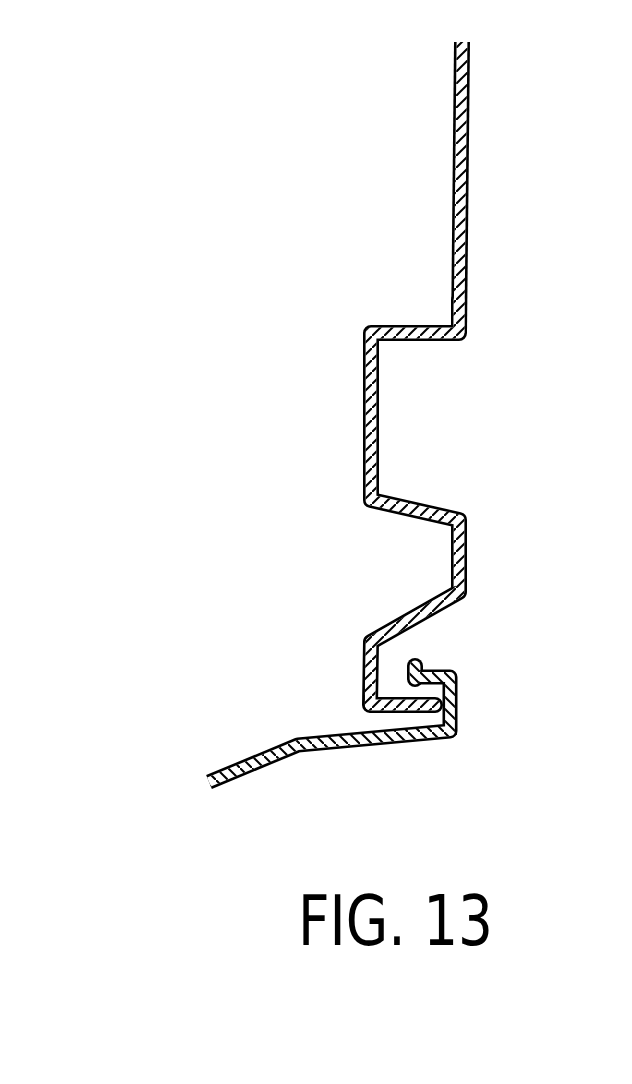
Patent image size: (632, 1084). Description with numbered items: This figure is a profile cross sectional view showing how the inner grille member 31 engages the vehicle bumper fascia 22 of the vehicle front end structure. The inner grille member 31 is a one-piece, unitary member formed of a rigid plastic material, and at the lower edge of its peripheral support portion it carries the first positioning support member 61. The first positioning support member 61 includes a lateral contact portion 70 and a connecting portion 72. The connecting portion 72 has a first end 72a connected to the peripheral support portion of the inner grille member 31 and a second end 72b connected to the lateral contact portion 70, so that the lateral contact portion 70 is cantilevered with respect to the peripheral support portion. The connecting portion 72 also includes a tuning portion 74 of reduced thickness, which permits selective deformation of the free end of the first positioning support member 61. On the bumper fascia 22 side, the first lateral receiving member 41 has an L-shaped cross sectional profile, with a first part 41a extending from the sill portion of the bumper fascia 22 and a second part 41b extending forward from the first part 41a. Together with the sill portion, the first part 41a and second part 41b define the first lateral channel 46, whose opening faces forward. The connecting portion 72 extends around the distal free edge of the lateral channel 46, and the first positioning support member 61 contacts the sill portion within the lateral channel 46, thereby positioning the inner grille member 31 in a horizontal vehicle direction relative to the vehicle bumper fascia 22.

The vehicle bumper fascia 22 is at (208, 757).
The inner grille member 31 is at (349, 366).
The first lateral receiving member 41 is at (493, 733).
The first part of the L-shaped cross sectional profile 41a is at (455, 695).
The second part of the L-shaped cross sectional profile 41b is at (447, 671).
The first lateral channel 46 is at (390, 677).
The first positioning support member 61 is at (347, 618).
The lateral contact portion 70 is at (401, 713).
The connecting portion 72 is at (362, 652).
The first end 72a is at (470, 597).
The second end 72b is at (363, 703).
The tuning portion 74 is at (344, 671).